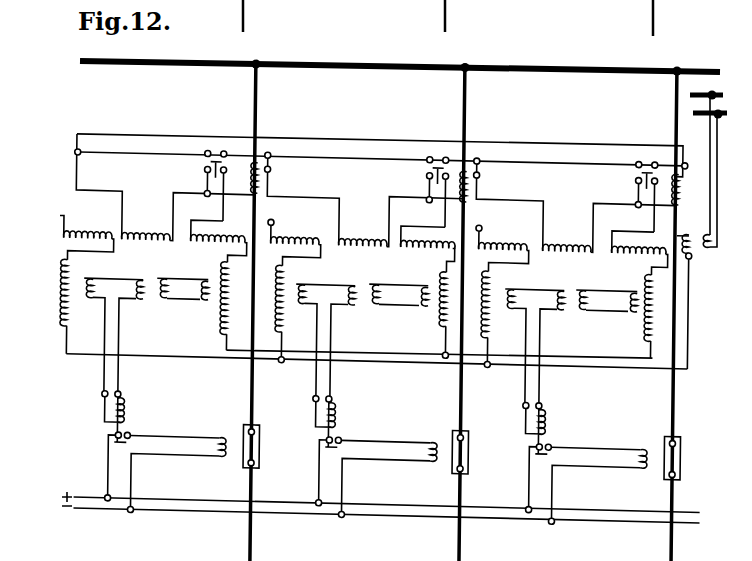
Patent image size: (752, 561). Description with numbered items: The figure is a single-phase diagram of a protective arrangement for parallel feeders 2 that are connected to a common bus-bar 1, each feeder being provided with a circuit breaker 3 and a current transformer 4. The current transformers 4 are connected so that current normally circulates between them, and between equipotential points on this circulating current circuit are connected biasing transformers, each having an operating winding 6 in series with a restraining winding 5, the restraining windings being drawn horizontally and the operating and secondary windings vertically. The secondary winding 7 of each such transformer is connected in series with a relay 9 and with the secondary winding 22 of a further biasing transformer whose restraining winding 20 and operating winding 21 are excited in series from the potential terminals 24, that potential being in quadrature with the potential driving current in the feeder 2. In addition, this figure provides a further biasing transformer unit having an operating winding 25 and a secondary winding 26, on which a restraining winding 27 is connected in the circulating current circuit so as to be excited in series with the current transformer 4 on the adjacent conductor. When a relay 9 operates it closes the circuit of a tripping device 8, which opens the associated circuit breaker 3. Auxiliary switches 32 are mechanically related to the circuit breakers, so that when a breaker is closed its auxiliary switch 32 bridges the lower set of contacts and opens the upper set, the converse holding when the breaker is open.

The bus-bar 1 is at (352, 58).
The feeder 2 is at (673, 99).
The circuit breaker 3 is at (683, 449).
The current transformer 4 is at (689, 172).
The restraining winding 5 is at (428, 237).
The operating winding 6 is at (658, 294).
The secondary winding 7 is at (626, 296).
The tripping device 8 is at (641, 436).
The relay 9 is at (556, 412).
The restraining winding 20 is at (295, 234).
The operating winding 21 is at (490, 306).
The secondary winding 22 is at (523, 291).
The potential terminals 24 is at (692, 243).
The operating winding 25 is at (583, 297).
The secondary winding 26 is at (557, 299).
The restraining winding 27 is at (356, 235).
The auxiliary switch 32 is at (634, 168).